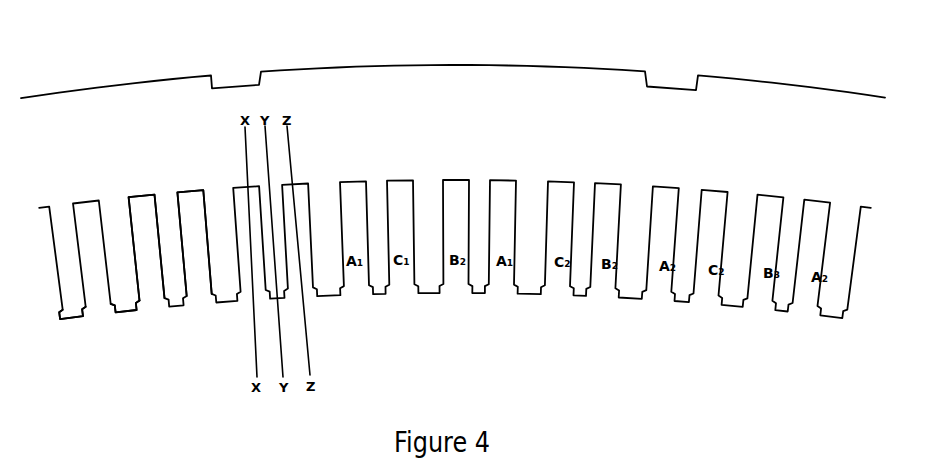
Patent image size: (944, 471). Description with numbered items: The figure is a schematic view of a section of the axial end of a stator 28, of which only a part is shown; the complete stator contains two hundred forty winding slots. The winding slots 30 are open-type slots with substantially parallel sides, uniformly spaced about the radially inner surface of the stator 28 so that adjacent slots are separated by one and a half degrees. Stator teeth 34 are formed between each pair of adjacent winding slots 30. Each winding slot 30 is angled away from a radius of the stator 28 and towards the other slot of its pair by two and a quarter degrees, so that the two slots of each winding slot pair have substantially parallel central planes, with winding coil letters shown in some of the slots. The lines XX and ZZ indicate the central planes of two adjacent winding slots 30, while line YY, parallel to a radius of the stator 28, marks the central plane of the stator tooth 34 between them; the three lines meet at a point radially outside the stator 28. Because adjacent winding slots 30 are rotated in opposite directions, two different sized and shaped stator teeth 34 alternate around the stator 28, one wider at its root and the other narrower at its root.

The stator 28 is at (710, 71).
The winding slot 30 is at (200, 286).
The stator tooth 34 is at (125, 302).